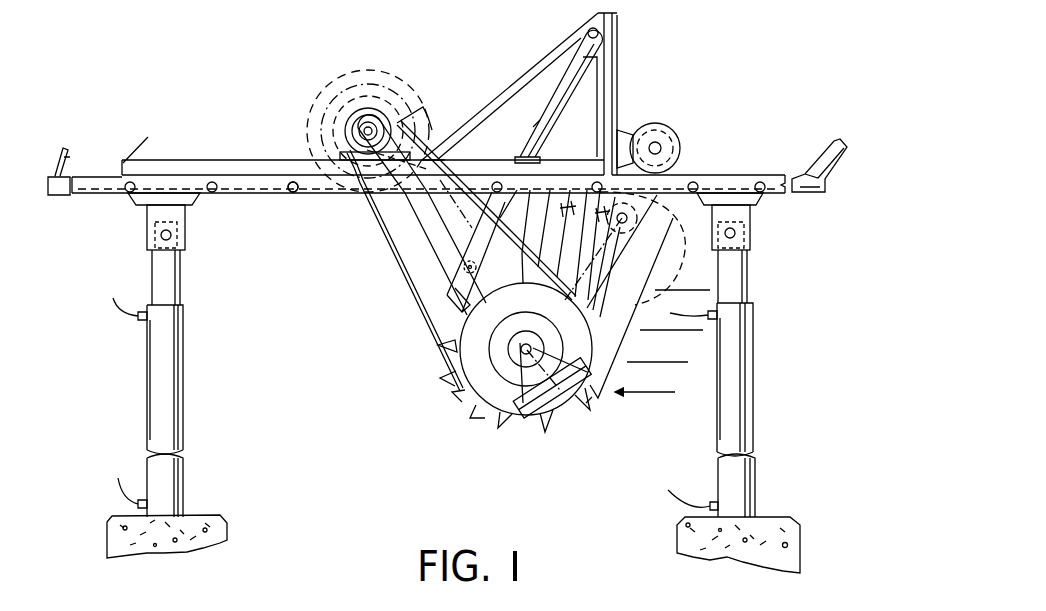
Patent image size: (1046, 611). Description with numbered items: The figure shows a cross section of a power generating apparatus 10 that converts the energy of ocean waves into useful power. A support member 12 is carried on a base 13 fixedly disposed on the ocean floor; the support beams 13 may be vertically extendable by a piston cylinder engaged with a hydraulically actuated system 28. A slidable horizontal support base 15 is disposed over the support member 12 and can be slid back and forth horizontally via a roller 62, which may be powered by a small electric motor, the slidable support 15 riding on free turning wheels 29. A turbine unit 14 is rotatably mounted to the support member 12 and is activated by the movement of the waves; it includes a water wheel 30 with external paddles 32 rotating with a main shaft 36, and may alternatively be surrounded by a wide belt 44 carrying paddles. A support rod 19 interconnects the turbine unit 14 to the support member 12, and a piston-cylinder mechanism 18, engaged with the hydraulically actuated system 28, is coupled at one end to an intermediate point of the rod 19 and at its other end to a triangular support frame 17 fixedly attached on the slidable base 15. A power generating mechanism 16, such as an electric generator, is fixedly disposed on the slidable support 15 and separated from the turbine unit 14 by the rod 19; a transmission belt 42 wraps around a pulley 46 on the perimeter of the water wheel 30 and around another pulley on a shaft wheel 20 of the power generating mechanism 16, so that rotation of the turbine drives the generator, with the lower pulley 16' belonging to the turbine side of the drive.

The power generating apparatus 10 is at (325, 85).
The support member 12 is at (247, 198).
The base 13 is at (185, 391).
The turbine unit 14 is at (578, 418).
The slidable horizontal support base 15 is at (168, 158).
The power generating mechanism 16 is at (391, 120).
The lower pulley 16' is at (526, 349).
The triangular support frame 17 is at (509, 77).
The piston-cylinder mechanism 18 is at (547, 103).
The support rod 19 is at (442, 247).
The shaft wheel 20 is at (377, 107).
The hydraulically actuated system 28 is at (535, 127).
The free turning wheels 29 is at (293, 194).
The water wheel 30 is at (682, 228).
The external paddles 32 is at (478, 418).
The main shaft 36 is at (540, 336).
The transmission belt 42 is at (390, 253).
The wide belt 44 is at (397, 277).
The pulley 46 is at (586, 403).
The roller 62 is at (681, 135).